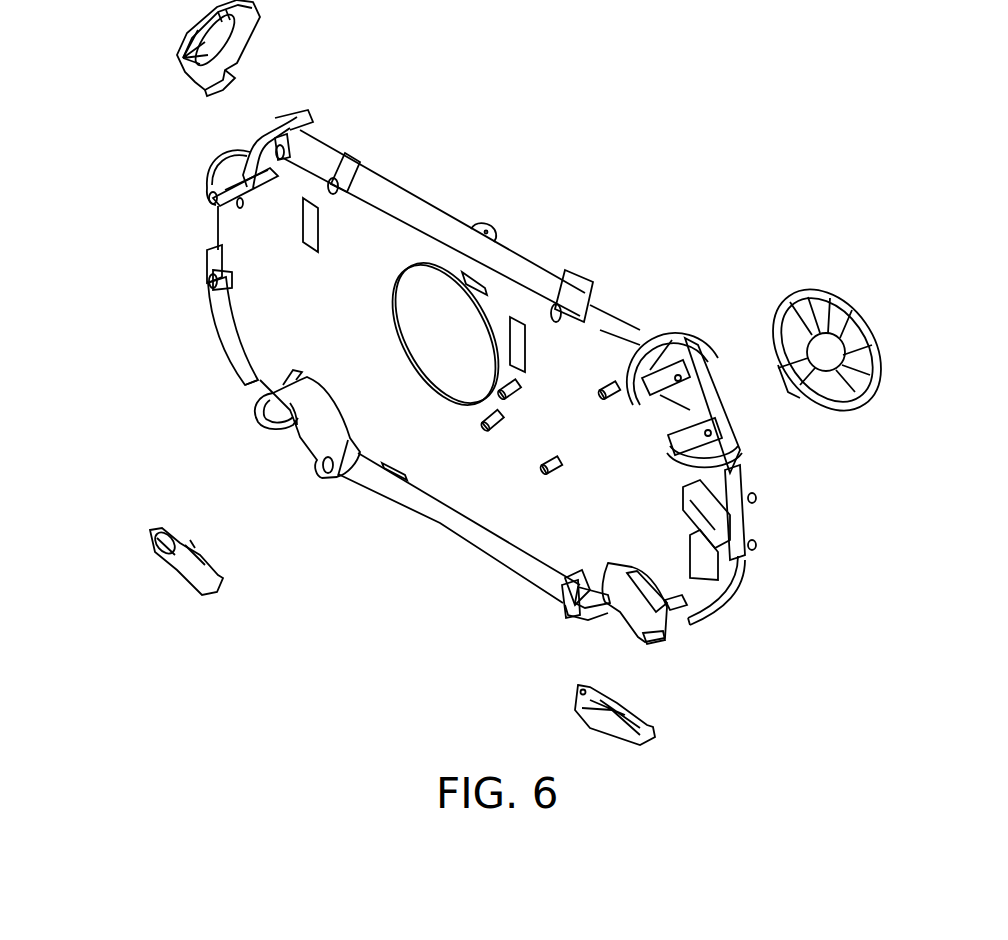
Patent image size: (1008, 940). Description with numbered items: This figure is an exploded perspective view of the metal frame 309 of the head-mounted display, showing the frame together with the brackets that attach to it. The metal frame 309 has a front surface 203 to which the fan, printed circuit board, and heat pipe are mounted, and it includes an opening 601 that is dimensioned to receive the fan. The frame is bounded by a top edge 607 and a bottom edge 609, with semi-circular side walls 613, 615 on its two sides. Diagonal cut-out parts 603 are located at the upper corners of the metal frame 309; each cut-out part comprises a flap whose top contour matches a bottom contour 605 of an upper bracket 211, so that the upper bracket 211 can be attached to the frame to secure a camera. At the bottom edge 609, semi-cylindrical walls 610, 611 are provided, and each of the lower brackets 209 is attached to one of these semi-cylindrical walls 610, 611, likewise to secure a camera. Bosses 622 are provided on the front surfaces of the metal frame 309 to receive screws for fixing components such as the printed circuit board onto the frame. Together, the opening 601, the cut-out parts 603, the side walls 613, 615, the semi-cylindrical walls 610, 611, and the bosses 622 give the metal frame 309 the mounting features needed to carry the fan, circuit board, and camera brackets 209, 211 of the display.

The front surface 203 is at (327, 329).
The lower bracket 209 is at (148, 538).
The upper bracket 211 is at (177, 57).
The metal frame 309 is at (560, 115).
The opening 601 is at (467, 344).
The diagonal cut-out part 603 is at (230, 138).
The bottom contour 605 is at (245, 47).
The top edge 607 is at (418, 207).
The bottom edge 609 is at (407, 512).
The semi-cylindrical wall 610 is at (295, 437).
The semi-cylindrical wall 611 is at (645, 623).
The semi-circular side wall 613 is at (215, 236).
The semi-circular side wall 615 is at (728, 573).
The bosses 622 is at (557, 460).